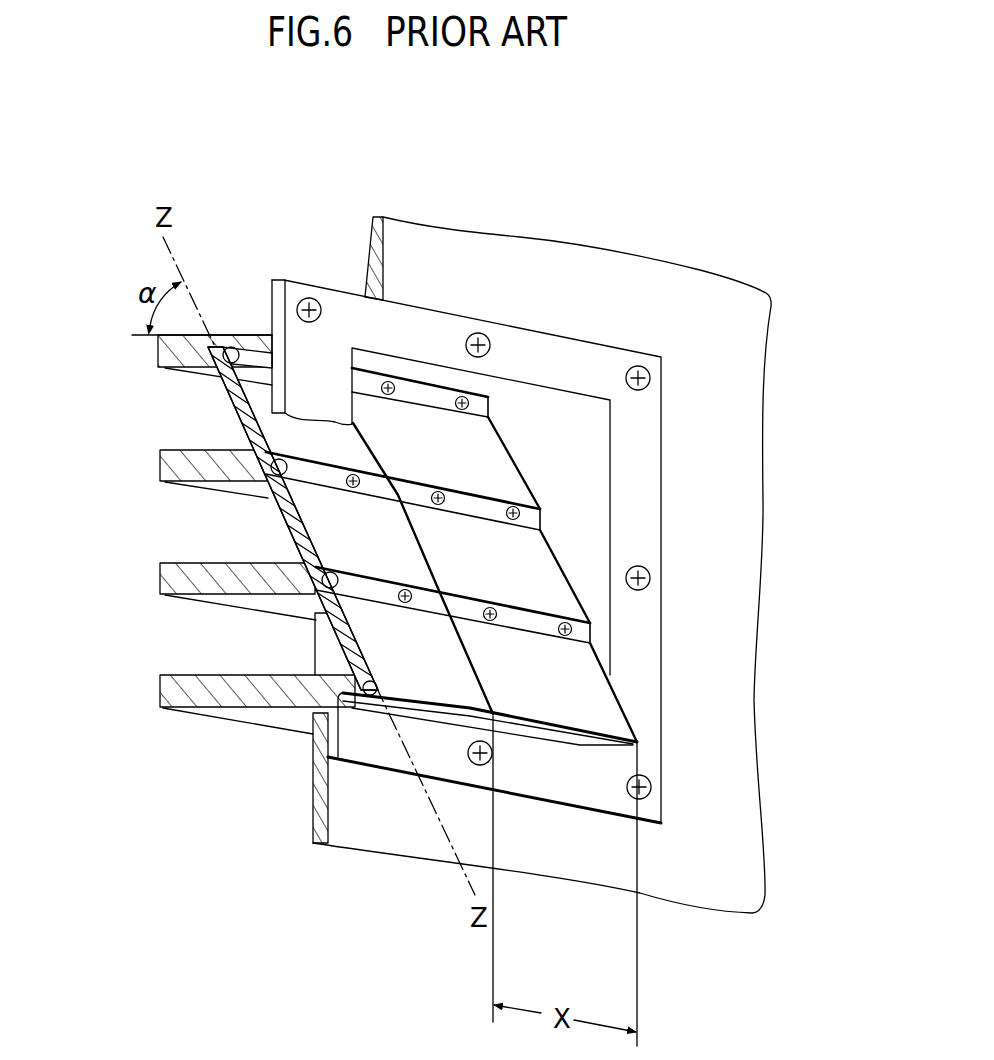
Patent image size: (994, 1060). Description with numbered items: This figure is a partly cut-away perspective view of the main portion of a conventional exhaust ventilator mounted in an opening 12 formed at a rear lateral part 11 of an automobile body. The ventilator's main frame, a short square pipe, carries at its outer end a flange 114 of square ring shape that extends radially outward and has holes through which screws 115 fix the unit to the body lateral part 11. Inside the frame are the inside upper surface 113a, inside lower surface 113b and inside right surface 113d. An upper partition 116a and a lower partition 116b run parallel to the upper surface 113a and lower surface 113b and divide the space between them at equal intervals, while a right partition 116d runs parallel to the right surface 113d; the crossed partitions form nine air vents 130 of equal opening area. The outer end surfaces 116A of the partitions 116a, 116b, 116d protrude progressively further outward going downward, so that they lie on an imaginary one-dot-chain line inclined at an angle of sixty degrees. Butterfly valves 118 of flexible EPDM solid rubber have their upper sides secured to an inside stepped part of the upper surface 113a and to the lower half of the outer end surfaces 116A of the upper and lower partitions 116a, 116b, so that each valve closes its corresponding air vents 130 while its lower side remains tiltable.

The rear lateral part of body 11 is at (670, 325).
The opening 12 is at (306, 713).
The inside upper surface 113a is at (163, 362).
The inside lower surface 113b is at (178, 676).
The inside right surface 113d is at (540, 417).
The flange 114 is at (340, 303).
The screws 115 is at (634, 367).
The upper partition 116a is at (158, 458).
The lower partition 116b is at (158, 580).
The outer end surfaces of partitions 116A is at (279, 483).
The right partition 116d is at (325, 643).
The butterfly valve 118 is at (488, 472).
The air vents 130 is at (178, 424).